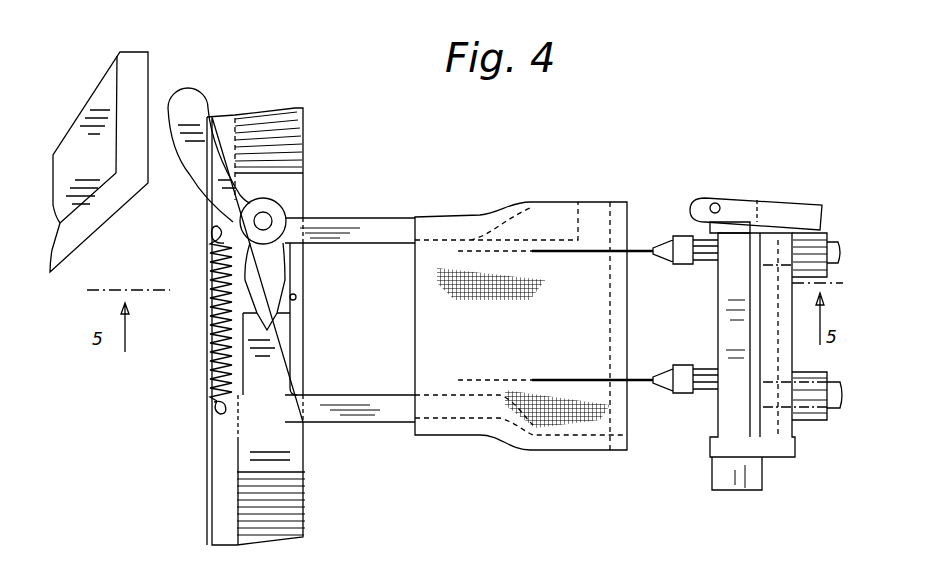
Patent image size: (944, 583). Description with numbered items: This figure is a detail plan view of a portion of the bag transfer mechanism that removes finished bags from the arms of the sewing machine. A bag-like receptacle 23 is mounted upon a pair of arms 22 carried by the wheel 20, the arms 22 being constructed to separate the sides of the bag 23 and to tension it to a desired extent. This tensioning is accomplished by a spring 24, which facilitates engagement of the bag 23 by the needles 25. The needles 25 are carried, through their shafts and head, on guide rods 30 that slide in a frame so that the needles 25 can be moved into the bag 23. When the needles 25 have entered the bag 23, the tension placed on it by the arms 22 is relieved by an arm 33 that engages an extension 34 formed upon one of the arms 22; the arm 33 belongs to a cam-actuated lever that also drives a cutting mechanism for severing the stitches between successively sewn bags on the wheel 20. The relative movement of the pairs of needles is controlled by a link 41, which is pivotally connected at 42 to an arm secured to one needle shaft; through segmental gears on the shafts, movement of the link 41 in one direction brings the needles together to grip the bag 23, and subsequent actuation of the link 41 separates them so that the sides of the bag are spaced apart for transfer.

The wheel 20 is at (279, 143).
The arms 22 is at (358, 232).
The bag-like receptacle 23 is at (597, 228).
The spring 24 is at (217, 327).
The needles 25 is at (645, 254).
The guide rods 30 is at (832, 233).
The arm 33 is at (137, 80).
The extension 34 is at (192, 105).
The link 41 is at (798, 210).
The pivotal connection 42 is at (713, 204).